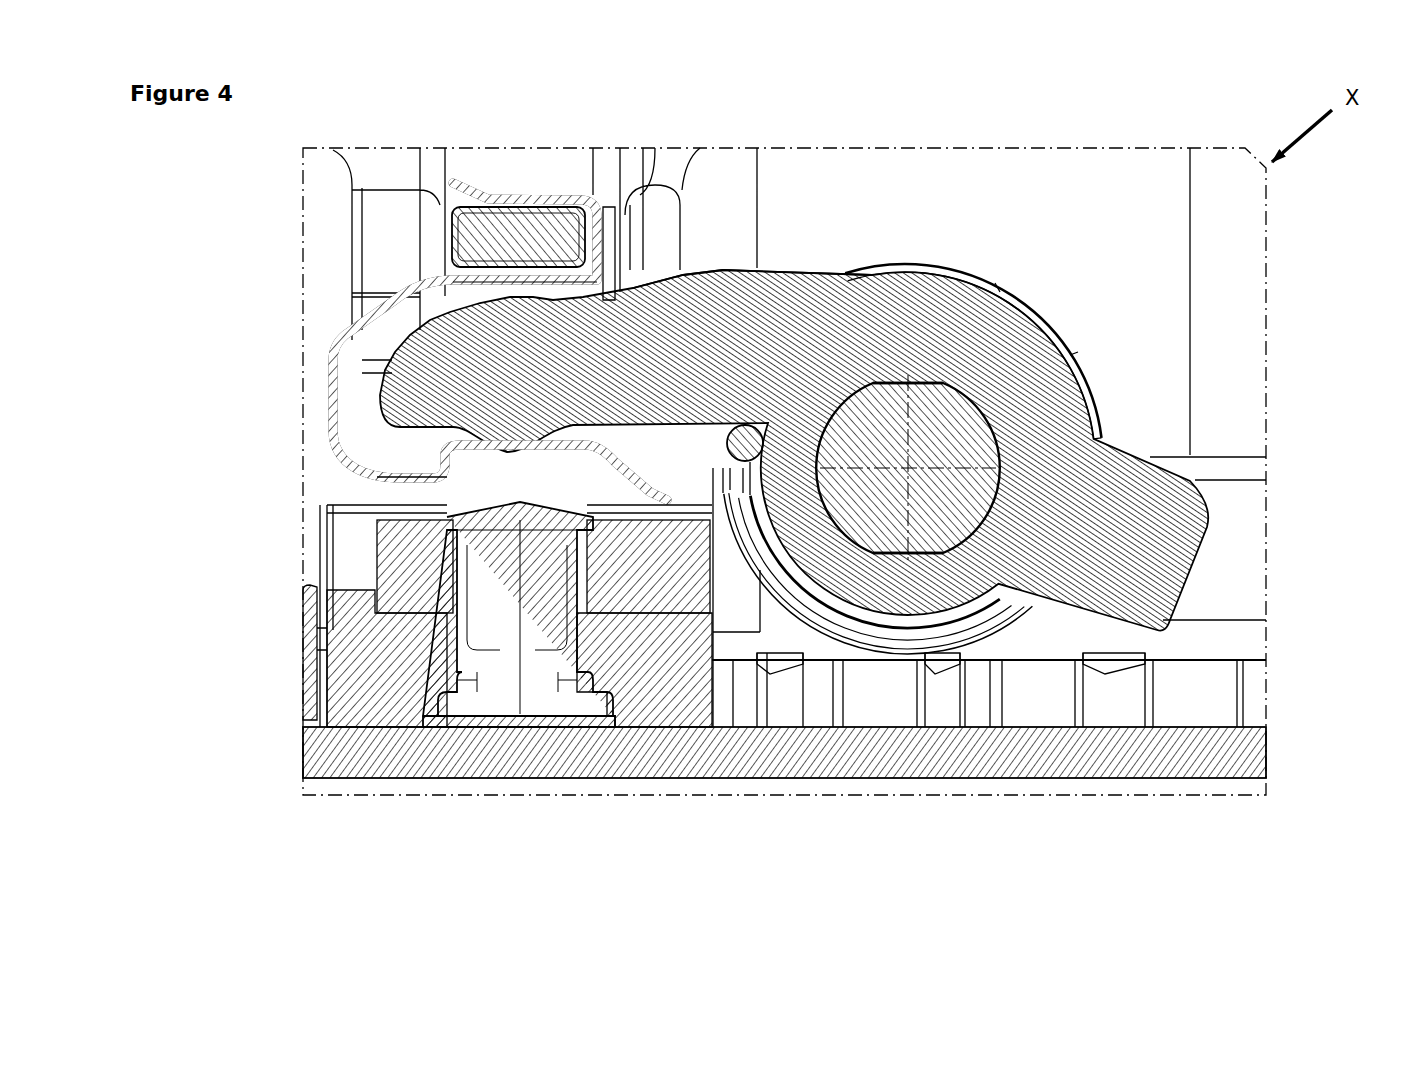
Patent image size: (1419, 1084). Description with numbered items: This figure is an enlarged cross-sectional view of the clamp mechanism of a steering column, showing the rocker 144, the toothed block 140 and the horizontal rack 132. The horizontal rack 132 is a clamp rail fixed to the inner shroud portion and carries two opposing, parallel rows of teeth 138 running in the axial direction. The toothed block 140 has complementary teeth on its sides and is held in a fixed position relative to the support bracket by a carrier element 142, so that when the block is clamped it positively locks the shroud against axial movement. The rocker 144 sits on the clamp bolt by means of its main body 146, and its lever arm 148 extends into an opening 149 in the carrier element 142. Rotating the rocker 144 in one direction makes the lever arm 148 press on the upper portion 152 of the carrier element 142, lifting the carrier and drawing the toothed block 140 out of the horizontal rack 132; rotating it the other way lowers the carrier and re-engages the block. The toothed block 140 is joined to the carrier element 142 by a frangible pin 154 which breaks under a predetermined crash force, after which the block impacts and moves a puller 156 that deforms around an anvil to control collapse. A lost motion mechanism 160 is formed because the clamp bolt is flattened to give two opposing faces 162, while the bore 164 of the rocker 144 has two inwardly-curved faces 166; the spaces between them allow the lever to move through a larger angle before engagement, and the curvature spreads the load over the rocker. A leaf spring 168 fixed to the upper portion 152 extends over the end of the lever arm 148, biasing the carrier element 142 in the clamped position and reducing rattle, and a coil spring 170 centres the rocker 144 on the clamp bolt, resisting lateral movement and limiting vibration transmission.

The horizontal rack 132 is at (892, 692).
The teeth 138 is at (970, 693).
The toothed block 140 is at (380, 677).
The carrier element 142 is at (405, 558).
The rocker 144 is at (819, 268).
The main body 146 is at (938, 330).
The lever arm 148 is at (627, 328).
The opening 149 is at (560, 288).
The upper portion 152 is at (485, 237).
The frangible pin 154 is at (505, 660).
The puller 156 is at (310, 649).
The lost motion mechanism 160 is at (701, 238).
The opposing faces 162 is at (903, 389).
The bore 164 is at (876, 380).
The inwardly-curved faces 166 is at (928, 388).
The leaf spring 168 is at (405, 312).
The coil spring 170 is at (747, 410).